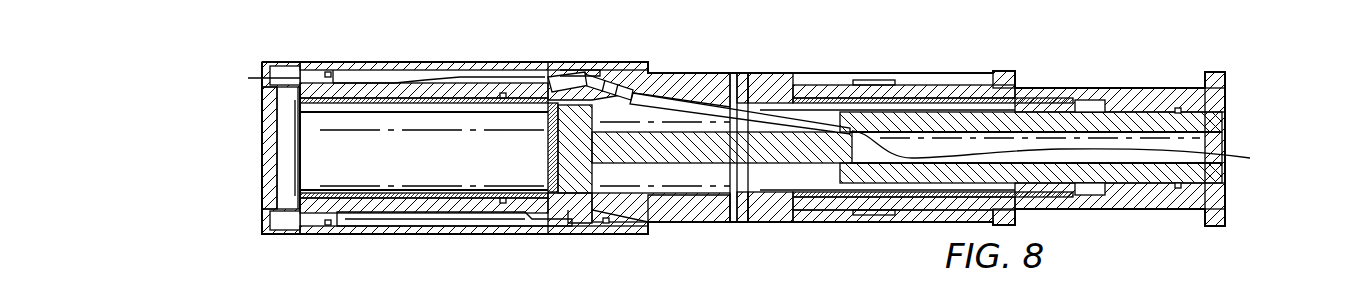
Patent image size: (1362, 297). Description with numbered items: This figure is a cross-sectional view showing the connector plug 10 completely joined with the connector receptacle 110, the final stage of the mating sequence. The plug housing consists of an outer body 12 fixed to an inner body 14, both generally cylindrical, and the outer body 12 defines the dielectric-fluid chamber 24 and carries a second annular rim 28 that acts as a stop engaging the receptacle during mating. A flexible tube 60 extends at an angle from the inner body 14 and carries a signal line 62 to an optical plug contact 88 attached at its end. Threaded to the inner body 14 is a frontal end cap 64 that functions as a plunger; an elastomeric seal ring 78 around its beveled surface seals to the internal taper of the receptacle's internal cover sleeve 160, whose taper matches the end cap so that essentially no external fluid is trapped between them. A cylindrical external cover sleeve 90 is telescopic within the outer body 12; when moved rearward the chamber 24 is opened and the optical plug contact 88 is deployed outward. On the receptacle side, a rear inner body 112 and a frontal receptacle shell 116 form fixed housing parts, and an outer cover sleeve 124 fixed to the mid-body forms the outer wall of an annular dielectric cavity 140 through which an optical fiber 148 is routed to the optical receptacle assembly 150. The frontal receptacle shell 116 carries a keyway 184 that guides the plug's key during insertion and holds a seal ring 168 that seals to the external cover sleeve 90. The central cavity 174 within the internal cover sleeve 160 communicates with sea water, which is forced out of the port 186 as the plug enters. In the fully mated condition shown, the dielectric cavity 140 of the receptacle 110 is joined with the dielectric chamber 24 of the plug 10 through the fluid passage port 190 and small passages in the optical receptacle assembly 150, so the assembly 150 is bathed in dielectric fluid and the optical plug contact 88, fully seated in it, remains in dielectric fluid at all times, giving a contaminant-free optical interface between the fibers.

The connector plug 10 is at (1201, 55).
The outer body 12 is at (1147, 88).
The inner body 14 is at (1152, 190).
The chamber 24 is at (972, 140).
The second annular rim 28 is at (998, 71).
The flexible tube 60 is at (680, 100).
The signal line 62 is at (1208, 148).
The frontal end cap 64 is at (548, 128).
The seal ring 78 is at (556, 176).
The optical plug contact 88 is at (620, 92).
The external cover sleeve 90 is at (862, 95).
The connector receptacle 110 is at (238, 148).
The rear inner body 112 is at (452, 214).
The frontal receptacle shell 116 is at (845, 223).
The outer cover sleeve 124 is at (483, 62).
The cavity 140 is at (348, 72).
The optical fiber 148 is at (402, 78).
The optical receptacle assembly 150 is at (566, 70).
The internal cover sleeve 160 is at (430, 192).
The seal ring 168 is at (736, 210).
The central cavity 174 is at (358, 174).
The keyway 184 is at (910, 73).
The port 186 is at (758, 73).
The fluid passage port 190 is at (572, 224).